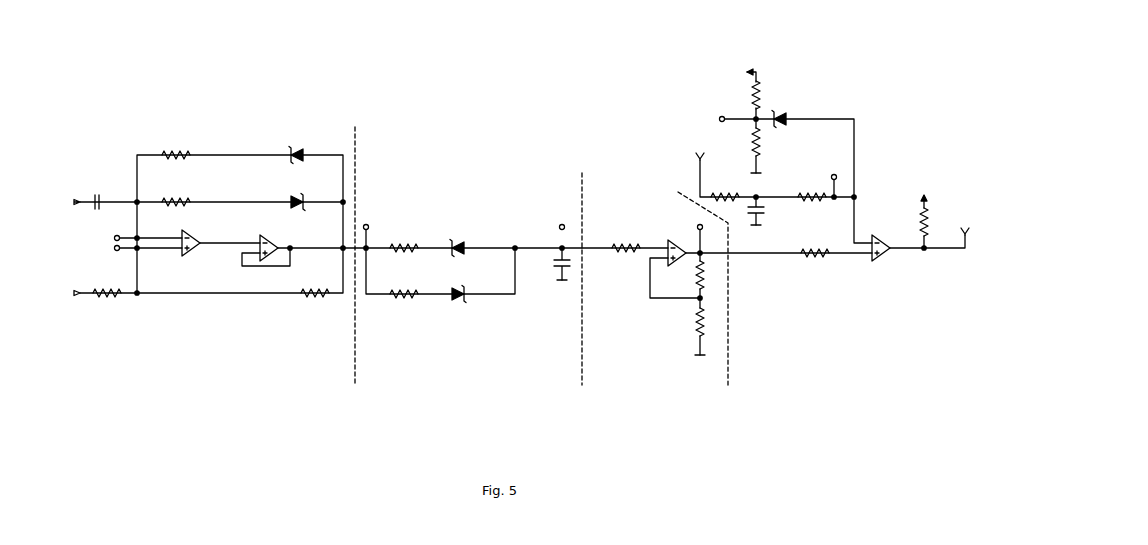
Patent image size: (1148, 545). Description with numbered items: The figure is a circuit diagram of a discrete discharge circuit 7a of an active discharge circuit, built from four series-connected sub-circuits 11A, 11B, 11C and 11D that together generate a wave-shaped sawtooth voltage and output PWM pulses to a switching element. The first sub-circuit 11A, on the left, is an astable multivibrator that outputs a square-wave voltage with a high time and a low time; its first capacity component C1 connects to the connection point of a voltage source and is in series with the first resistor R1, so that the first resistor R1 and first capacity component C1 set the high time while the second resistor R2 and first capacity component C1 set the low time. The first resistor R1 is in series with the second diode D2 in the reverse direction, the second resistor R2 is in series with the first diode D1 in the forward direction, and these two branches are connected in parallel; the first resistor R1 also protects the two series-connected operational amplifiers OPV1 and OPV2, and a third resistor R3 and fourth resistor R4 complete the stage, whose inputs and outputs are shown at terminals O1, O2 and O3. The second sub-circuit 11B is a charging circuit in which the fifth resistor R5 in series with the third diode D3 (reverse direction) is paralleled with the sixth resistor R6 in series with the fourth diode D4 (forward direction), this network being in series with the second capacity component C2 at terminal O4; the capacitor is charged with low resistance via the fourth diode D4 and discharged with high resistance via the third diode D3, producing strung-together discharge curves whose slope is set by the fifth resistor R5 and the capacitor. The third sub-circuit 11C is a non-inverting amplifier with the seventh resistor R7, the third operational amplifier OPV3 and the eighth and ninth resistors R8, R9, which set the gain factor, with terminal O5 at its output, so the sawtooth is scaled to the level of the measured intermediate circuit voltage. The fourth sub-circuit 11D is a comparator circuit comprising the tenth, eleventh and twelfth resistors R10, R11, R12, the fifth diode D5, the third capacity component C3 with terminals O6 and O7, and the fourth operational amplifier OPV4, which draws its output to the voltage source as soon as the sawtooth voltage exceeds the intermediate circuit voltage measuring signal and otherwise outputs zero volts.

The discrete discharge circuit 7a is at (470, 143).
The first sub-circuit 11A is at (357, 379).
The second sub-circuit 11B is at (582, 379).
The third sub-circuit 11C is at (728, 379).
The fourth sub-circuit 11D is at (967, 48).
The first resistor R1 is at (176, 149).
The second resistor R2 is at (176, 196).
The third resistor R3 is at (107, 287).
The fourth resistor R4 is at (314, 287).
The fifth resistor R5 is at (407, 257).
The sixth resistor R6 is at (404, 301).
The seventh resistor R7 is at (622, 241).
The eighth resistor R8 is at (709, 273).
The ninth resistor R9 is at (709, 322).
The tenth resistor R10 is at (813, 245).
The eleventh resistor R11 is at (812, 190).
The twelfth resistor R12 is at (724, 190).
The first capacity component C1 is at (96, 196).
The second capacity component C2 is at (556, 276).
The third capacity component C3 is at (768, 213).
The first diode D1 is at (298, 194).
The second diode D2 is at (298, 146).
The third diode D3 is at (459, 240).
The fourth diode D4 is at (459, 289).
The fifth diode D5 is at (781, 110).
The operational amplifier OPV1 is at (182, 250).
The operational amplifier OPV2 is at (264, 258).
The third operational amplifier OPV3 is at (674, 260).
The fourth operational amplifier OPV4 is at (879, 253).
The terminal O1 is at (106, 237).
The terminal O2 is at (106, 249).
The terminal O3 is at (366, 220).
The terminal O4 is at (561, 220).
The terminal O5 is at (699, 220).
The terminal O6 is at (835, 170).
The terminal O7 is at (721, 111).